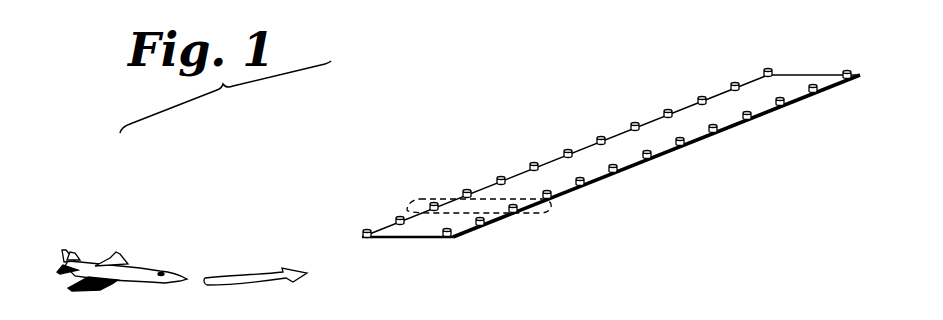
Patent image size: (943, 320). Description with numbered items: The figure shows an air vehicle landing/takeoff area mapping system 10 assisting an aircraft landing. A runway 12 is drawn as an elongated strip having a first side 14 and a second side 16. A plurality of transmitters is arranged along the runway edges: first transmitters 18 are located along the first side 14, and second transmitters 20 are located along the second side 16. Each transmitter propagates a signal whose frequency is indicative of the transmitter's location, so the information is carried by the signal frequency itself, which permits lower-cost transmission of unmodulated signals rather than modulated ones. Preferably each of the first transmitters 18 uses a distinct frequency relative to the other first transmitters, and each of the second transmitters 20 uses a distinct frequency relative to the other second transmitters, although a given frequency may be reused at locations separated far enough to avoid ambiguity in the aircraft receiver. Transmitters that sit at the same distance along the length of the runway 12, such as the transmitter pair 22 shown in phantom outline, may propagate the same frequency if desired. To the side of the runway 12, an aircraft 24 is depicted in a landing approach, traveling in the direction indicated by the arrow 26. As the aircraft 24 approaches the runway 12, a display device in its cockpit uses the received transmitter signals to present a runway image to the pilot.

The air vehicle landing/takeoff area mapping system 10 is at (370, 127).
The runway 12 is at (390, 238).
The first side 14 is at (737, 127).
The second side 16 is at (683, 108).
The first transmitters 18 is at (782, 107).
The second transmitters 20 is at (735, 82).
The transmitter pair 22 is at (525, 213).
The aircraft 24 is at (133, 260).
The arrow 26 is at (262, 275).